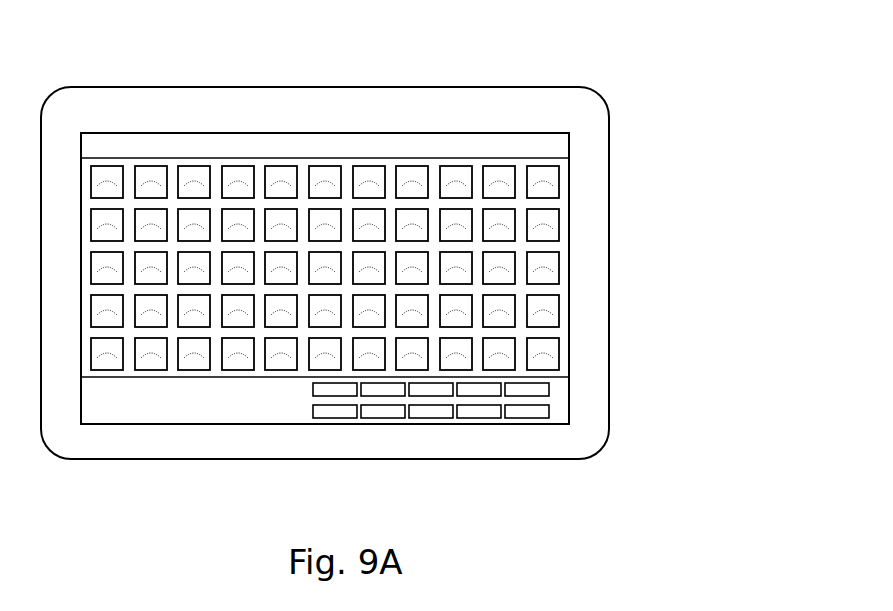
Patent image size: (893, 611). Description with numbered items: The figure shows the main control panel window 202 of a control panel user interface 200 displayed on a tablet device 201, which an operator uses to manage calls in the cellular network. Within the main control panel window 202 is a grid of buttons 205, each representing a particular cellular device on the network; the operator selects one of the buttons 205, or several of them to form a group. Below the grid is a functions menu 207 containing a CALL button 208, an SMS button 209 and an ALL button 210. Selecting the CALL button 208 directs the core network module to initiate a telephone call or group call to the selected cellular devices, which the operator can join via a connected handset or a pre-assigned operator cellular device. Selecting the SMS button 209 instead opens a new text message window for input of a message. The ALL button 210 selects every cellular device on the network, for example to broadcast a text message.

The control panel user interface 200 is at (153, 130).
The tablet device 201 is at (487, 87).
The main control panel window 202 is at (290, 147).
The buttons 205 is at (545, 186).
The functions menu 207 is at (548, 399).
The CALL button 208 is at (313, 389).
The SMS button 209 is at (404, 412).
The ALL button 210 is at (375, 390).